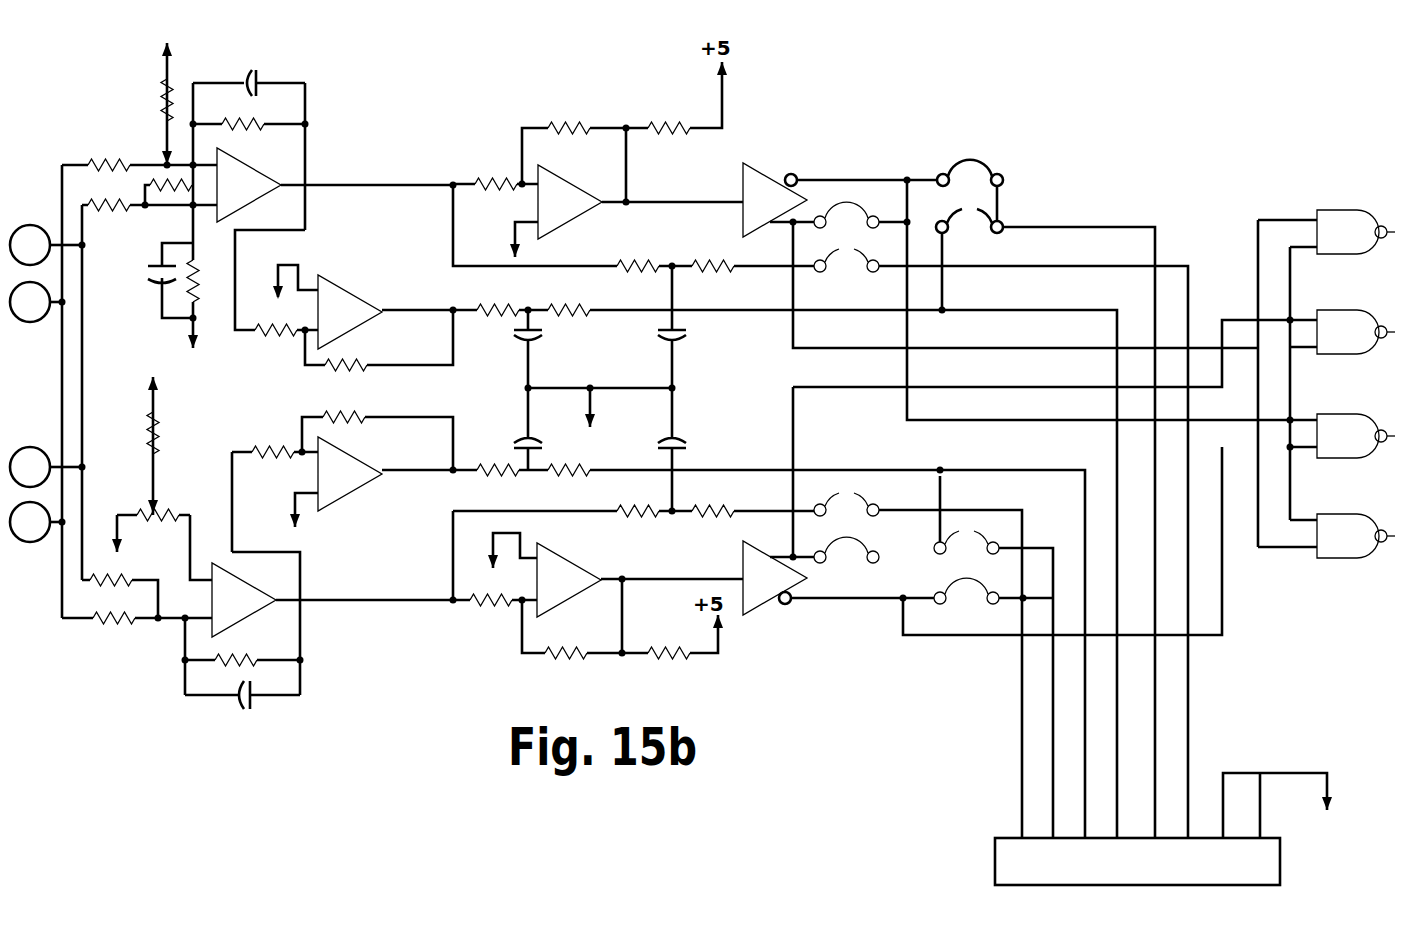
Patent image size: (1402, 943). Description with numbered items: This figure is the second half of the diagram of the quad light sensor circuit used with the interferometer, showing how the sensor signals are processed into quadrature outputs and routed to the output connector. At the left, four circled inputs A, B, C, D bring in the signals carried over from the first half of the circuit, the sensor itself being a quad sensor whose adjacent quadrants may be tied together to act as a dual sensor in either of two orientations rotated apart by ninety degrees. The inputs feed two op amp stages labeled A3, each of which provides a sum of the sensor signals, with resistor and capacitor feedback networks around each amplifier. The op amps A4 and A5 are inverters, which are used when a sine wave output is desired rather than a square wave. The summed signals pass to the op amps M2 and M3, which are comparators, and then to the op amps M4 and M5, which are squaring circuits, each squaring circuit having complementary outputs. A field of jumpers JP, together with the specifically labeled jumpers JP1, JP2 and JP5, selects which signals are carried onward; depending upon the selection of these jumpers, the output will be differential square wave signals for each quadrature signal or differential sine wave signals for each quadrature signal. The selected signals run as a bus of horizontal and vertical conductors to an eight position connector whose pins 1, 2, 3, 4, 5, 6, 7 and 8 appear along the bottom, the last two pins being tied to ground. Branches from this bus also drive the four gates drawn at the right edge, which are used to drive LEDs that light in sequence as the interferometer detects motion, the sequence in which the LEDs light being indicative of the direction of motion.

The input terminal A is at (48, 245).
The input terminal B is at (38, 302).
The input terminal C is at (48, 467).
The input terminal D is at (38, 522).
The op amp A3 is at (246, 392).
The op amp A4 is at (350, 312).
The op amp A5 is at (350, 474).
The op amp M2 is at (570, 202).
The op amp M3 is at (569, 580).
The op amp M4 is at (775, 200).
The op amp M5 is at (775, 578).
The jumper JP is at (906, 429).
The jumper JP1 is at (970, 175).
The jumper JP2 is at (846, 221).
The jumper JP5 is at (969, 228).
The connector pin 1 is at (1137, 861).
The connector pin 2 is at (1053, 863).
The connector pin 3 is at (1087, 863).
The connector pin 4 is at (1120, 863).
The connector pin 5 is at (1157, 863).
The connector pin 6 is at (1190, 863).
The connector pin 7 is at (1225, 863).
The connector pin 8 is at (1260, 863).